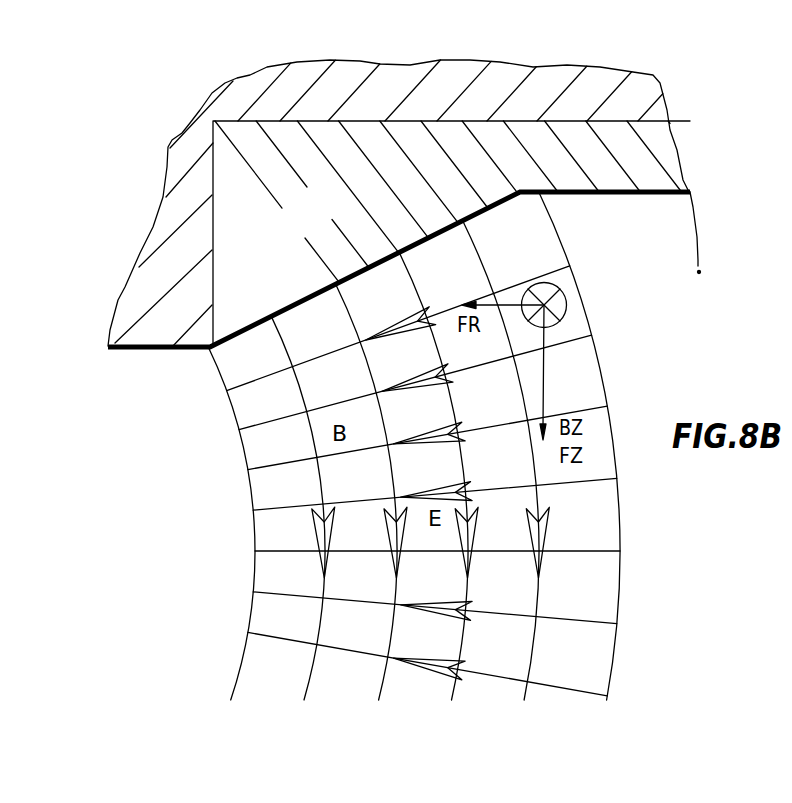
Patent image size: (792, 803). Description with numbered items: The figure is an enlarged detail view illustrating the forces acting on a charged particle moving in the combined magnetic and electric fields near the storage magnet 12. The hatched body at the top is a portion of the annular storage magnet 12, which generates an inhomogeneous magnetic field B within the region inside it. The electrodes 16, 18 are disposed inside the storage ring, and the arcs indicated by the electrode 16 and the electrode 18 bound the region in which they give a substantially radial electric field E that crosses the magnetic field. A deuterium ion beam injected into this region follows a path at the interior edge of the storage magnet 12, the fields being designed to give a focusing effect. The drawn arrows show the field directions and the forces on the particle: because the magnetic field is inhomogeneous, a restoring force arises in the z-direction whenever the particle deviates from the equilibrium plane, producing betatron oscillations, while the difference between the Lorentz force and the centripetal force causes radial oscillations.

The storage magnet 12 is at (319, 216).
The electrode 16 is at (252, 562).
The electrode 18 is at (628, 555).